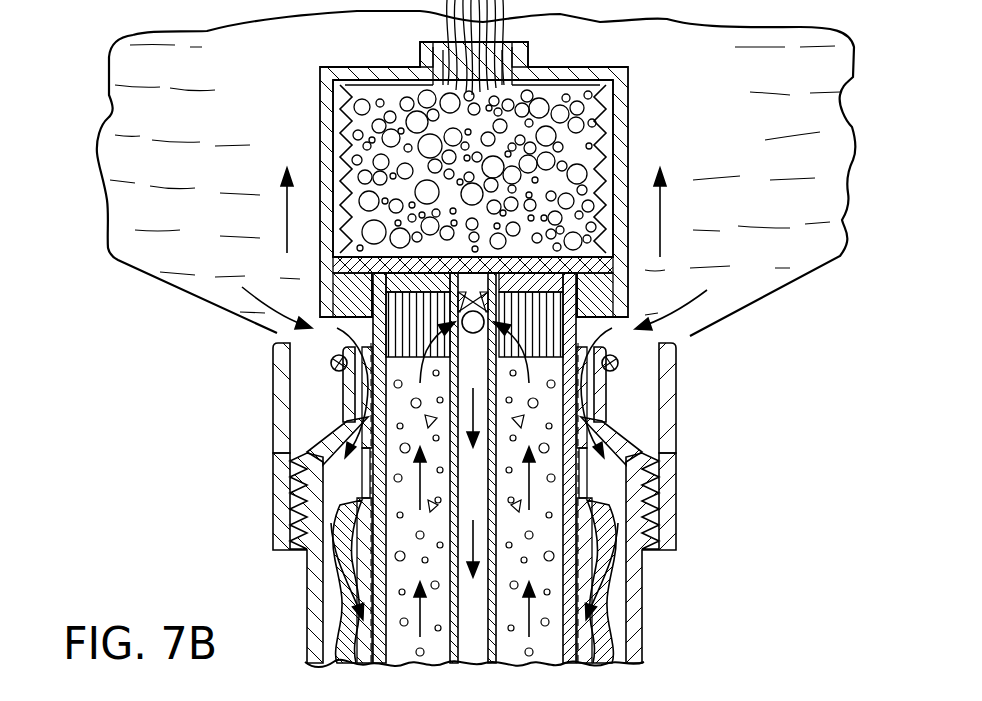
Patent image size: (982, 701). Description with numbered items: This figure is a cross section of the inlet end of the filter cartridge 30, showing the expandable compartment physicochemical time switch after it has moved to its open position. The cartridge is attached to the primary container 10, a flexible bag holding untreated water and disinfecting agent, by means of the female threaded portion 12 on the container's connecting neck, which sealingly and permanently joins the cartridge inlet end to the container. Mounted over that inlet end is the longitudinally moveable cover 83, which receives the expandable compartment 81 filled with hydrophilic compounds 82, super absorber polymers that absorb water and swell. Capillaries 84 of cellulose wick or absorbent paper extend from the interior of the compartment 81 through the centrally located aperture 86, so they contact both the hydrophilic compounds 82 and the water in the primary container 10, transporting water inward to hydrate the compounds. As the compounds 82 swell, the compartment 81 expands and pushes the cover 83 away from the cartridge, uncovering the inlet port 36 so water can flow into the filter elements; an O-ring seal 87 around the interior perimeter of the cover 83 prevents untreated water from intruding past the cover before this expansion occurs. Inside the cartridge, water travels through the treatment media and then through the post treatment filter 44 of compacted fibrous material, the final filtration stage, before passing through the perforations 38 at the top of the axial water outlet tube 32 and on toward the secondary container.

The primary container 10 is at (787, 283).
The female threaded portion 12 is at (660, 497).
The filter cartridge 30 is at (640, 600).
The axial water outlet tube 32 is at (350, 583).
The inlet port 36 is at (272, 344).
The perforations 38 is at (450, 355).
The post treatment filter 44 is at (386, 364).
The expandable compartment 81 is at (335, 122).
The hydrophilic compounds 82 is at (557, 130).
The moveable cover 83 is at (620, 165).
The capillaries 84 is at (528, 38).
The centrally located aperture 86 is at (420, 41).
The O-ring seal 87 is at (616, 371).